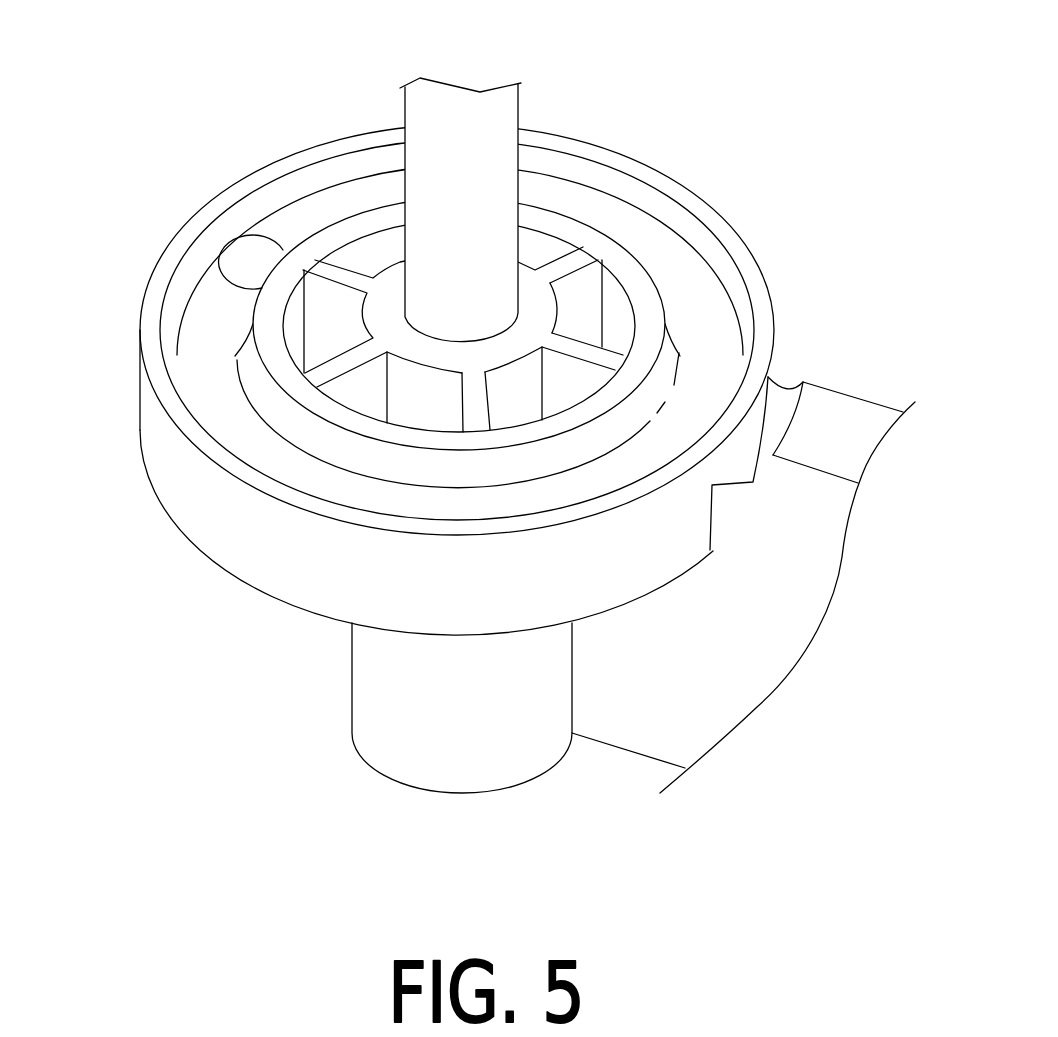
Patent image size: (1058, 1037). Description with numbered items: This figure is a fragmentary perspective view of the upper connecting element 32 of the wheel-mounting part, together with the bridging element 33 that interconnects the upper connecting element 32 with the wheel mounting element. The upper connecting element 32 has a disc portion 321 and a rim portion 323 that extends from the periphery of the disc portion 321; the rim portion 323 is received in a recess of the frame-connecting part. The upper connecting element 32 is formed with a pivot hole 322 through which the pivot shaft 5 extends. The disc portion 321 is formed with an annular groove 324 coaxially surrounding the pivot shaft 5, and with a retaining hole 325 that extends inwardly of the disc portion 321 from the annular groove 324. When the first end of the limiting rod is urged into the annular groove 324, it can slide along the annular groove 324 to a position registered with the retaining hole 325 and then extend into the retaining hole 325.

The pivot shaft 5 is at (495, 116).
The upper connecting element 32 is at (446, 439).
The bridging element 33 is at (748, 657).
The disc portion 321 is at (284, 560).
The pivot hole 322 is at (598, 260).
The rim portion 323 is at (752, 275).
The annular groove 324 is at (665, 257).
The retaining hole 325 is at (242, 262).